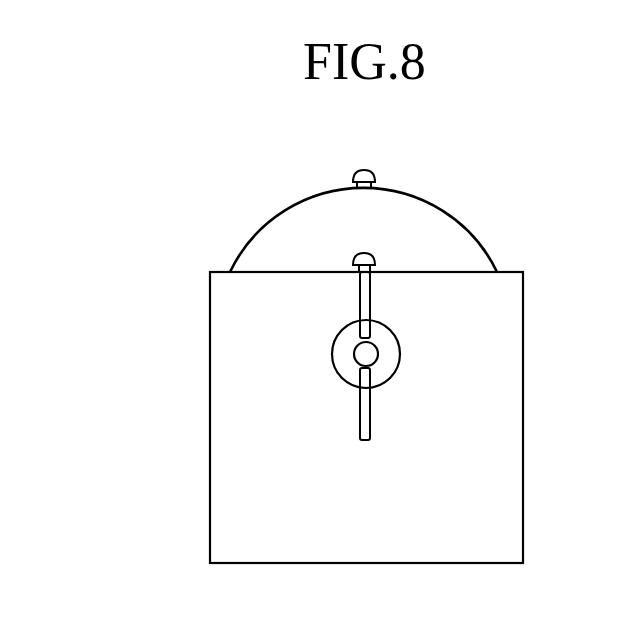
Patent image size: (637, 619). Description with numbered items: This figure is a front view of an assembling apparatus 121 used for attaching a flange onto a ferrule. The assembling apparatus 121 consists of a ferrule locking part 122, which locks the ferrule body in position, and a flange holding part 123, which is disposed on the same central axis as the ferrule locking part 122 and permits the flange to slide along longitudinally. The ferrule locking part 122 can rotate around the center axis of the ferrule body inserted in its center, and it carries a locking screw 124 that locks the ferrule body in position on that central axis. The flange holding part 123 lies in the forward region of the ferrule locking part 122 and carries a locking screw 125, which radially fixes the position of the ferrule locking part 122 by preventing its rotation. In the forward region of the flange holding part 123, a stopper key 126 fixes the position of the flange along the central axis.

The assembling apparatus 121 is at (546, 297).
The ferrule locking part 122 is at (288, 207).
The flange holding part 123 is at (470, 296).
The locking screw 124 is at (368, 170).
The locking screw 125 is at (366, 252).
The stopper key 126 is at (360, 291).